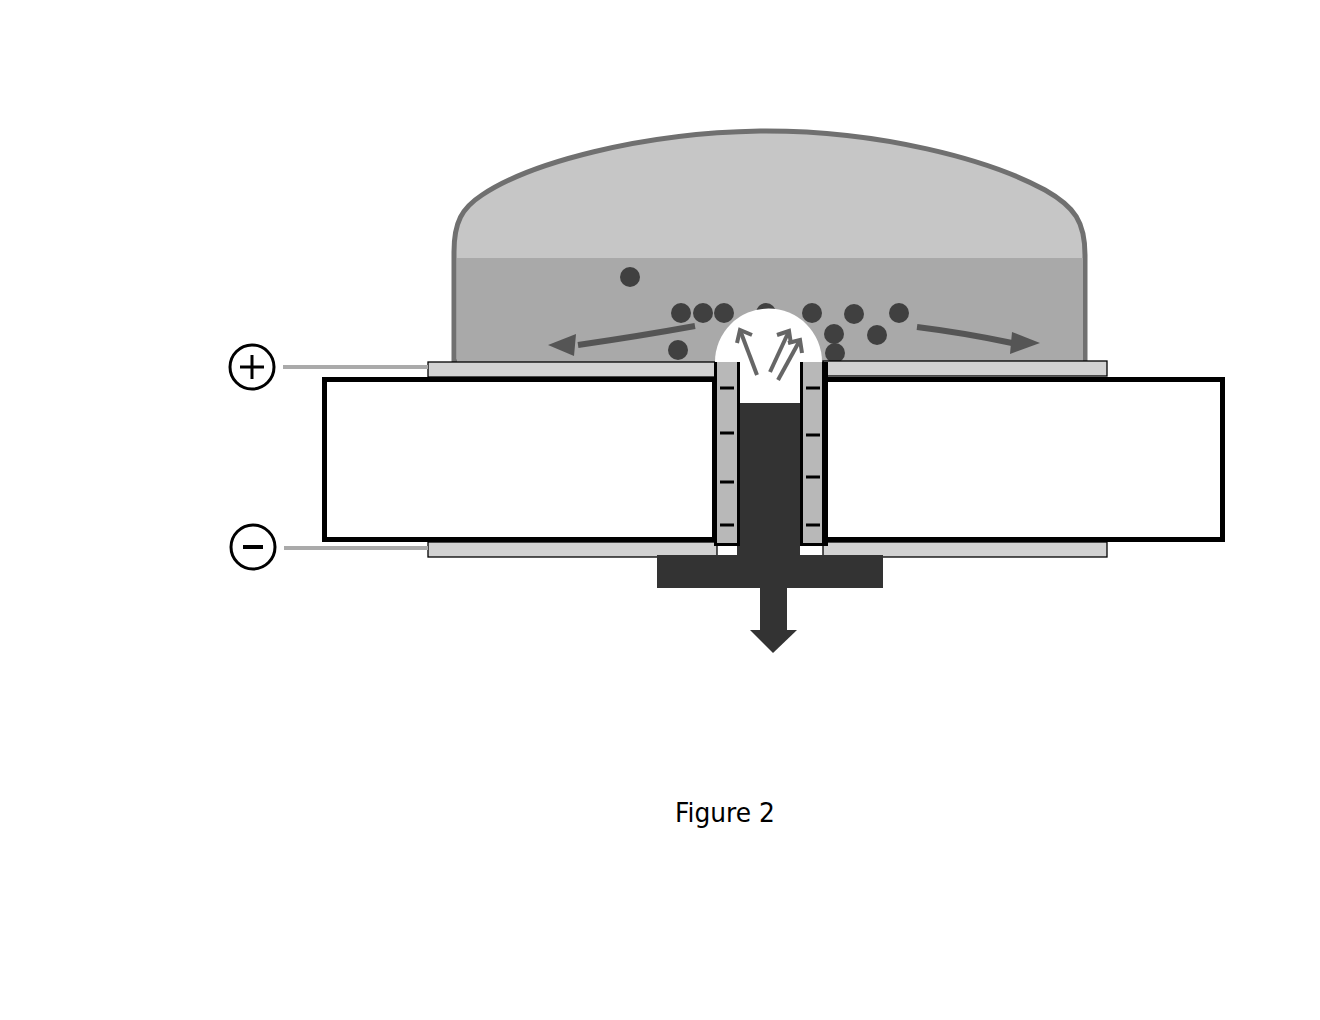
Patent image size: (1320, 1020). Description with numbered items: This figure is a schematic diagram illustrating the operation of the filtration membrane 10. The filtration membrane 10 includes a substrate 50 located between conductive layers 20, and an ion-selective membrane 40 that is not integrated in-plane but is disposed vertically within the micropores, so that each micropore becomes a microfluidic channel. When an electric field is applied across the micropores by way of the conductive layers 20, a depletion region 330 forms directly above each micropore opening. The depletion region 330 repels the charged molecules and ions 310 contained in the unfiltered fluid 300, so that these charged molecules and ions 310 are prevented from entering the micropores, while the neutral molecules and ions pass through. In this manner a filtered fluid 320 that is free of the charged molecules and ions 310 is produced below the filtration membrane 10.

The filtration membrane 10 is at (1220, 353).
The conductive layers 20 is at (450, 360).
The ion-selective membrane 40 is at (727, 493).
The substrate 50 is at (450, 443).
The unfiltered fluid 300 is at (1025, 298).
The charged molecules and ions 310 is at (815, 298).
The filtered fluid 320 is at (803, 567).
The depletion region 330 is at (773, 378).